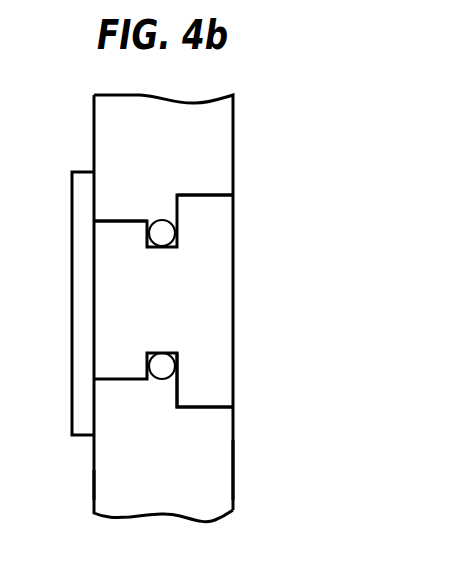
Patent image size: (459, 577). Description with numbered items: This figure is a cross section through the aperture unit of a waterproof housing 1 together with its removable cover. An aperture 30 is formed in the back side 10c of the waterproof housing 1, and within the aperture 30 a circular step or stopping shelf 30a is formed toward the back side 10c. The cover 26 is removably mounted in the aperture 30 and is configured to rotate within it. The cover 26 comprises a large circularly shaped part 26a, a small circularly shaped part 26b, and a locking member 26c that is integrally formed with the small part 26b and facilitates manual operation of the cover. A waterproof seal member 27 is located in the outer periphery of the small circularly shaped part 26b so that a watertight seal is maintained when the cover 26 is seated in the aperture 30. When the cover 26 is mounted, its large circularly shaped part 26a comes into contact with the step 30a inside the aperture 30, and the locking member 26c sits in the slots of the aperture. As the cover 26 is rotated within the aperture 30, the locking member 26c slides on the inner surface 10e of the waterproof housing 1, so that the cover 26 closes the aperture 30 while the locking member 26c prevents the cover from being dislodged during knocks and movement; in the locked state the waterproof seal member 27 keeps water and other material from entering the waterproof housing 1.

The waterproof housing 1 is at (235, 123).
The back side 10c is at (236, 467).
The inner surface 10e is at (93, 480).
The cover 26 is at (235, 246).
The large circularly shaped part 26a is at (208, 213).
The small circularly shaped part 26b is at (128, 222).
The locking member 26c is at (80, 197).
The waterproof seal member 27 is at (164, 226).
The aperture 30 is at (130, 379).
The step 30a is at (183, 388).